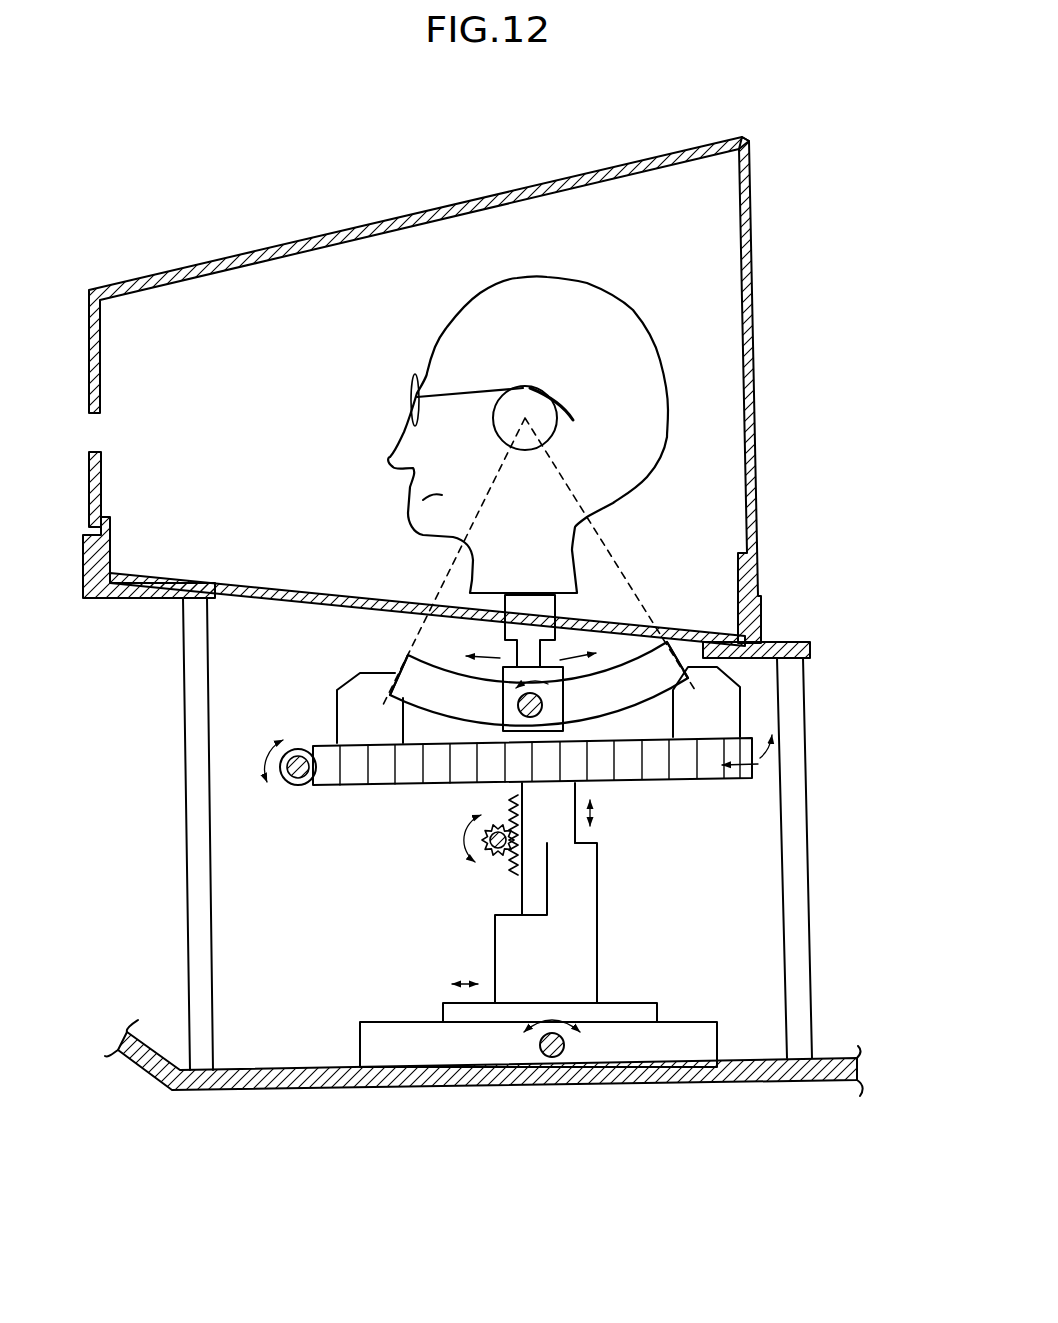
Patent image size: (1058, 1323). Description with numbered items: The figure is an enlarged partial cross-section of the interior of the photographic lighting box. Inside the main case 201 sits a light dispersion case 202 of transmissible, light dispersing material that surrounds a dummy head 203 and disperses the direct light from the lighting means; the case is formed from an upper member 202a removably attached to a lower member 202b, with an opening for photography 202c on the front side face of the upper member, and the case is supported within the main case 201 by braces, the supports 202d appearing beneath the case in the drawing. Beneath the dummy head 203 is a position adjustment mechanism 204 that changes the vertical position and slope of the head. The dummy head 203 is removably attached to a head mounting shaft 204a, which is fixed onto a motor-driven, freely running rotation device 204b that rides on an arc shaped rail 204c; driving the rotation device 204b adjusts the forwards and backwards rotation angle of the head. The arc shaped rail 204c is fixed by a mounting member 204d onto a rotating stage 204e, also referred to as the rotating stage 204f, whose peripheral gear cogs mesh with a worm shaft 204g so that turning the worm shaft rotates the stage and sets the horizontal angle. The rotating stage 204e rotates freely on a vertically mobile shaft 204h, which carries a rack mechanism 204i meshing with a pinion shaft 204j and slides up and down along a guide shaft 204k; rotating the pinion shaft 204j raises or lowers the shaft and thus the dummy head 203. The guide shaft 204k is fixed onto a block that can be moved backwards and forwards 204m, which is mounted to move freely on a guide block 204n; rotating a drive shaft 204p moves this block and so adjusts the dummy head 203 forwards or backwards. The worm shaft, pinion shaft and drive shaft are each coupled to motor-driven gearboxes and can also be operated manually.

The main case 201 is at (645, 1085).
The light dispersion case 202 is at (762, 381).
The upper member 202a is at (528, 178).
The lower member 202b is at (740, 573).
The opening for photography 202c is at (95, 599).
The support leg 202d is at (190, 901).
The dummy head 203 is at (595, 295).
The position adjustment mechanism 204 is at (240, 805).
The head mounting shaft 204a is at (497, 652).
The rotation device 204b is at (568, 717).
The arc shaped rail 204c is at (428, 687).
The mounting member 204d is at (343, 708).
The rotating stage 204e is at (592, 673).
The rotating stage 204f is at (360, 790).
The worm shaft 204g is at (285, 785).
The vertically mobile shaft 204h is at (565, 830).
The rack mechanism 204i is at (507, 795).
The pinion shaft 204j is at (482, 860).
The guide shaft 204k is at (592, 896).
The block that can be moved backwards and forwards 204m is at (637, 1004).
The guide block 204n is at (703, 1023).
The drive shaft 204p is at (566, 1047).